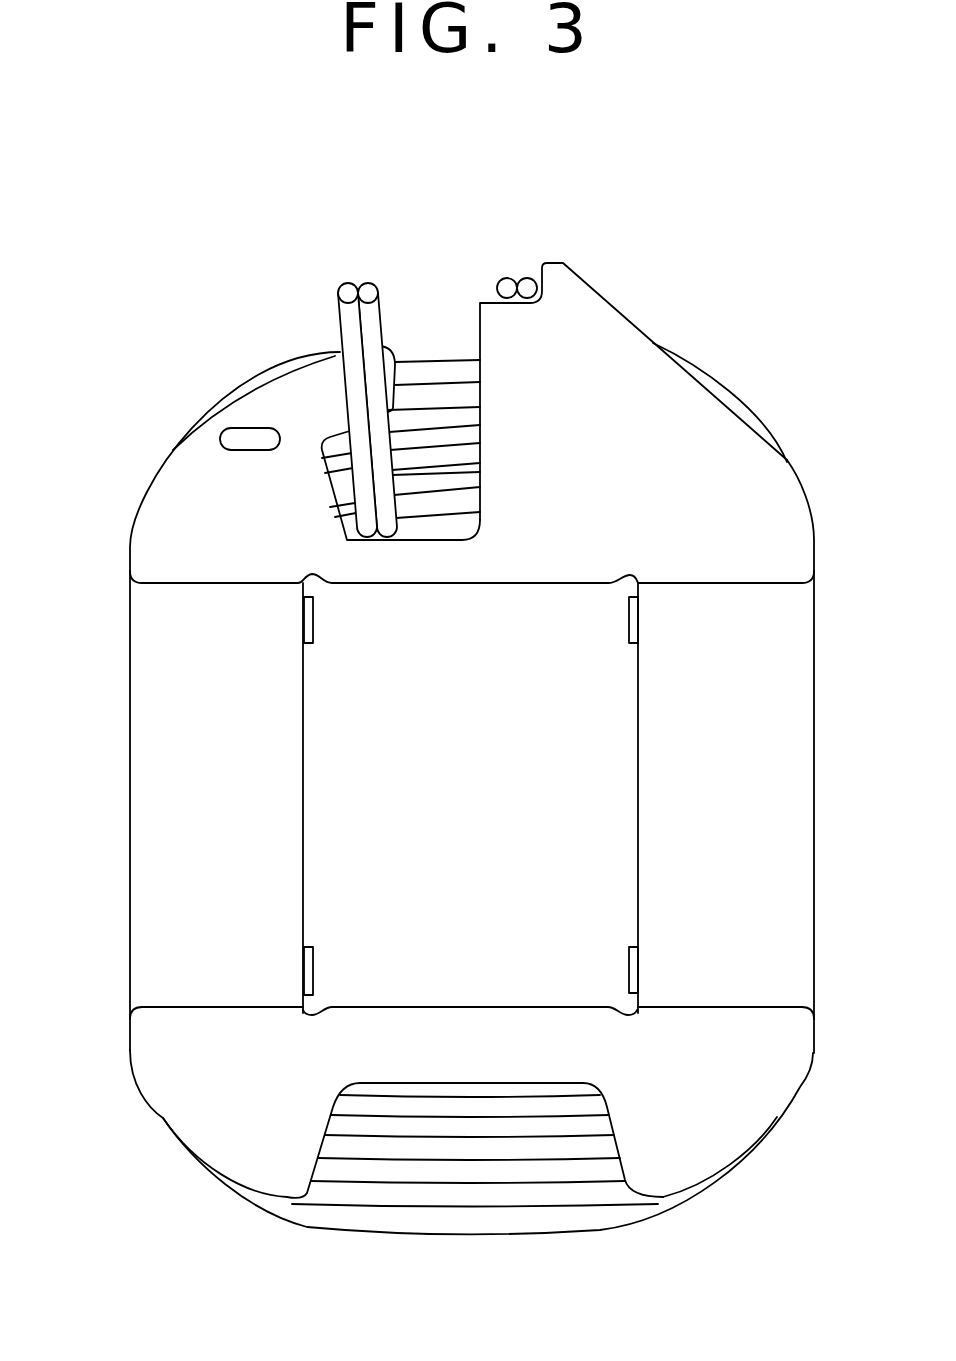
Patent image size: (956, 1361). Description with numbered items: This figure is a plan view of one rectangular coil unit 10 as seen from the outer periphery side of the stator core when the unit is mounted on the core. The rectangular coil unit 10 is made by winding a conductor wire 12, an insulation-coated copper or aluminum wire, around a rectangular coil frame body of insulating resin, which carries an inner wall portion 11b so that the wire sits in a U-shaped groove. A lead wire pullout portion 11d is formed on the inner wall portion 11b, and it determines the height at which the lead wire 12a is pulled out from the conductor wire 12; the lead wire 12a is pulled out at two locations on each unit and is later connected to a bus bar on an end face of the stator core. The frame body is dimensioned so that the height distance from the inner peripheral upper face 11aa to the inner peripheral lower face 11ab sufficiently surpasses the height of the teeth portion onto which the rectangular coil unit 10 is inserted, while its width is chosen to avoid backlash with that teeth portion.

The rectangular coil unit 10 is at (797, 261).
The inner peripheral upper face 11aa is at (472, 584).
The inner peripheral lower face 11ab is at (383, 1003).
The inner wall portion 11b is at (160, 1082).
The lead wire pullout portion 11d is at (536, 270).
The conductor wire 12 is at (403, 1233).
The lead wire 12a is at (369, 282).